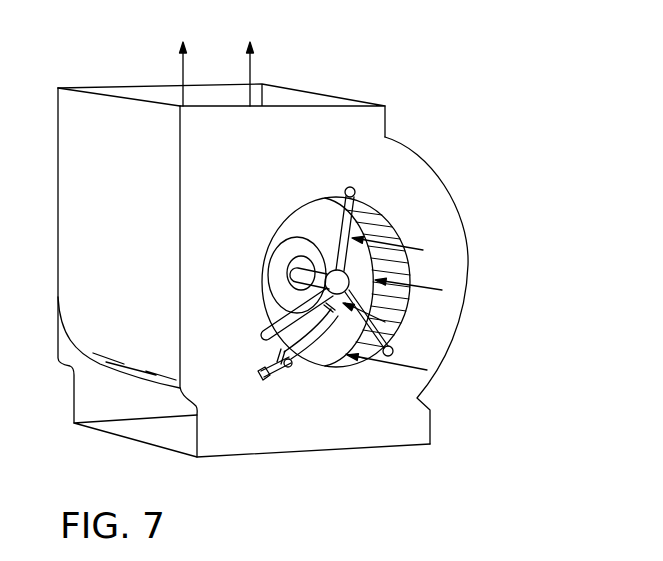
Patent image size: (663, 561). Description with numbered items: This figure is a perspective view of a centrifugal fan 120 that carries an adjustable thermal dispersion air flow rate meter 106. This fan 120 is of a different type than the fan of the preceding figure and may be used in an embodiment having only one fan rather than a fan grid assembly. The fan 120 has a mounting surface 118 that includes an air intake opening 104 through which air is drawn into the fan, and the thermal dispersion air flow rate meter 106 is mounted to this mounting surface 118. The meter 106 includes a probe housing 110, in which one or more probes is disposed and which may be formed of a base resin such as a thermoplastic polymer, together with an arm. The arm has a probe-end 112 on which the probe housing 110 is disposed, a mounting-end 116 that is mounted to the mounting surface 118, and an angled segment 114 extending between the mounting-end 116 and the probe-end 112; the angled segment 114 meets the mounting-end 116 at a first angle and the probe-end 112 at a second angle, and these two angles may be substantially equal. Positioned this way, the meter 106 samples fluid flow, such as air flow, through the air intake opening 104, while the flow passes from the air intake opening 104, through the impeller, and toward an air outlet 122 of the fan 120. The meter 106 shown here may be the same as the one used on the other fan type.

The air intake opening 104 is at (313, 212).
The thermal dispersion air flow rate meter 106 is at (265, 357).
The probe housing 110 is at (397, 333).
The probe-end 112 is at (332, 363).
The angled segment 114 is at (262, 333).
The mounting-end 116 is at (280, 377).
The mounting surface 118 is at (212, 214).
The centrifugal fan 120 is at (478, 192).
The air outlet 122 is at (277, 83).